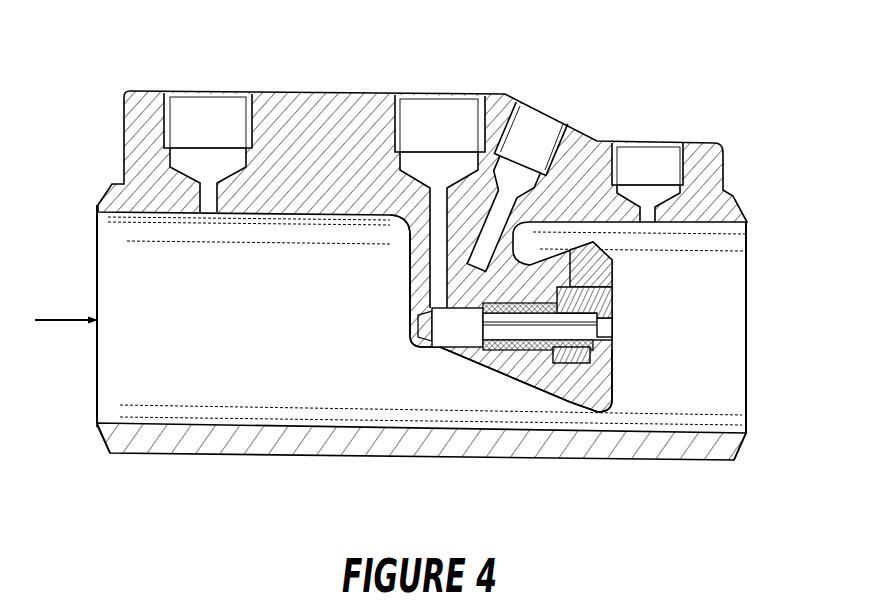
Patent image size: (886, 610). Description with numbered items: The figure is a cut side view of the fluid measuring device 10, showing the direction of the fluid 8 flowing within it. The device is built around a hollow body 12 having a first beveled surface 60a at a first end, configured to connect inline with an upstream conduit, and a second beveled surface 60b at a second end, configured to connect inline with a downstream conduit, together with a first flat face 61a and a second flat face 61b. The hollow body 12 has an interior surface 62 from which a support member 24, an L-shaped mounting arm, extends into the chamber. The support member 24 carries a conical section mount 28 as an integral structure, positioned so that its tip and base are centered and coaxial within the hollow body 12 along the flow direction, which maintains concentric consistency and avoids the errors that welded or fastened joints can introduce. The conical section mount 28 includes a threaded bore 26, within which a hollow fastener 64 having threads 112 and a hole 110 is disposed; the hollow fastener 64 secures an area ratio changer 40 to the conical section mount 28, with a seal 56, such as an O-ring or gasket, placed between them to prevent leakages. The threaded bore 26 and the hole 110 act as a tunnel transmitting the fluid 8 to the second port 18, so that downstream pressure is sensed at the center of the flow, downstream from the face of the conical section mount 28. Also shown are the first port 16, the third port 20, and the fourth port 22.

The fluid 8 is at (62, 318).
The fluid measuring device 10 is at (92, 78).
The hollow body 12 is at (443, 458).
The first port 16 is at (212, 88).
The second port 18 is at (443, 90).
The third port 20 is at (549, 108).
The fourth port 22 is at (653, 133).
The support member 24 is at (410, 278).
The threaded bore 26 is at (453, 325).
The conical section mount 28 is at (555, 398).
The area ratio changer 40 is at (612, 278).
The seal 56 is at (585, 363).
The first beveled surface 60a is at (105, 440).
The second beveled surface 60b is at (738, 450).
The first flat face 61a is at (96, 424).
The second flat face 61b is at (746, 435).
The interior surface 62 is at (118, 423).
The hollow fastener 64 is at (612, 307).
The hole 110 is at (622, 327).
The threads 112 is at (488, 345).